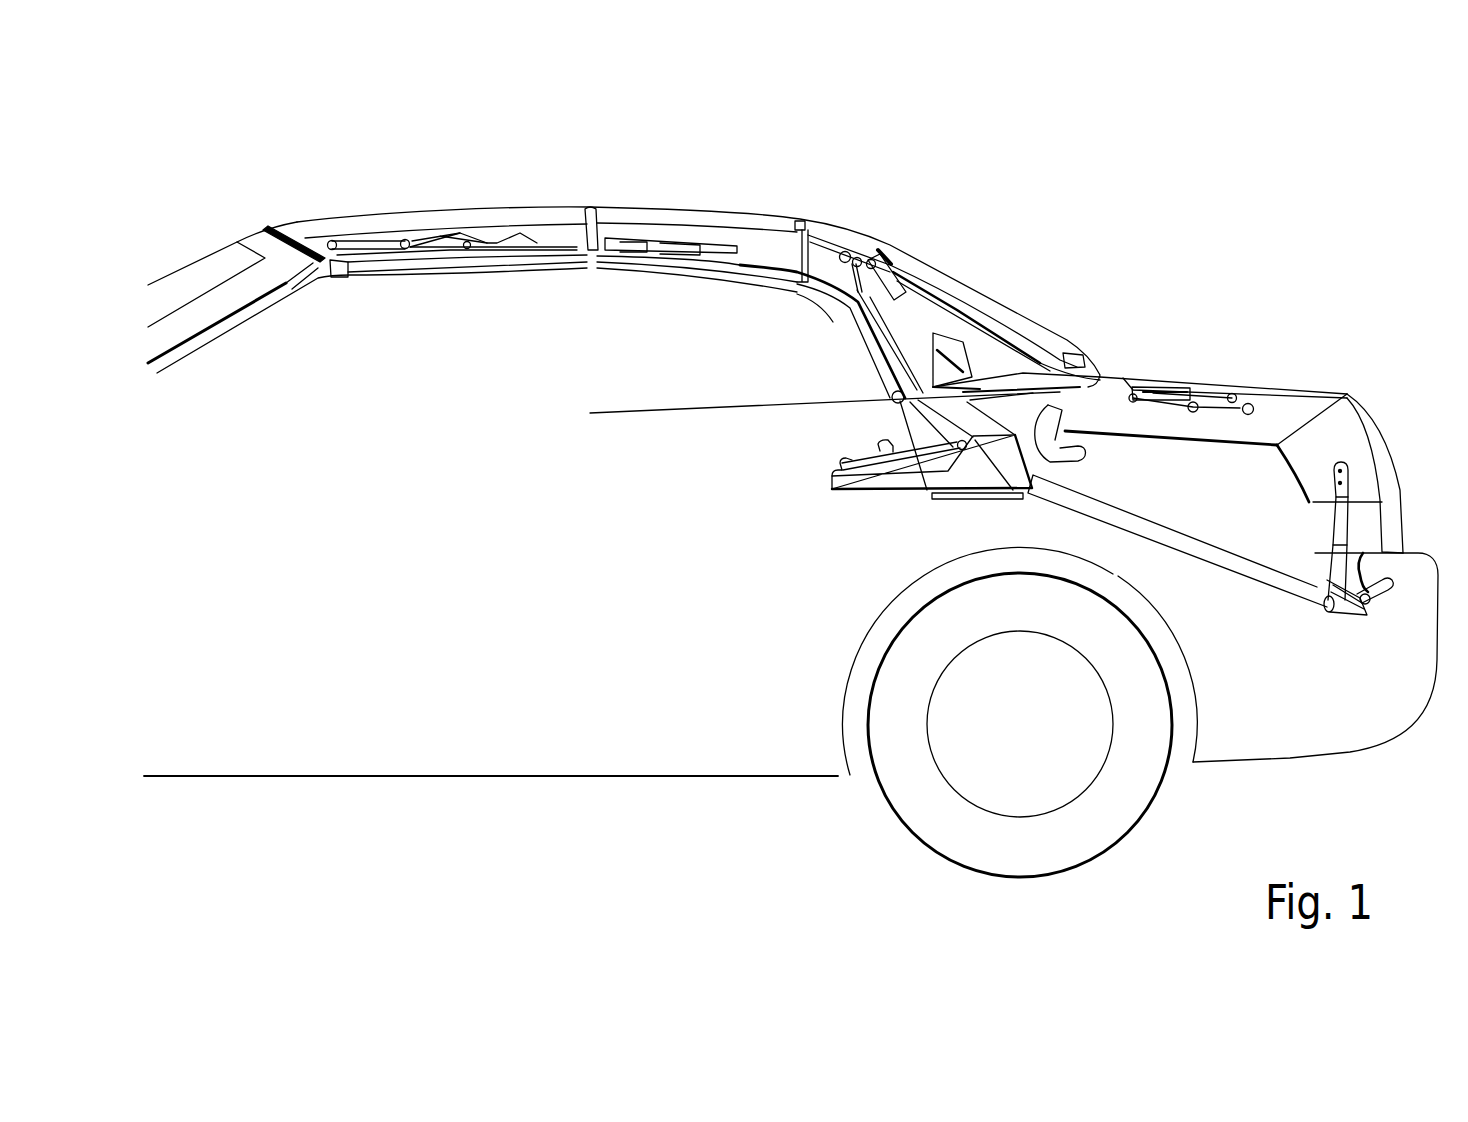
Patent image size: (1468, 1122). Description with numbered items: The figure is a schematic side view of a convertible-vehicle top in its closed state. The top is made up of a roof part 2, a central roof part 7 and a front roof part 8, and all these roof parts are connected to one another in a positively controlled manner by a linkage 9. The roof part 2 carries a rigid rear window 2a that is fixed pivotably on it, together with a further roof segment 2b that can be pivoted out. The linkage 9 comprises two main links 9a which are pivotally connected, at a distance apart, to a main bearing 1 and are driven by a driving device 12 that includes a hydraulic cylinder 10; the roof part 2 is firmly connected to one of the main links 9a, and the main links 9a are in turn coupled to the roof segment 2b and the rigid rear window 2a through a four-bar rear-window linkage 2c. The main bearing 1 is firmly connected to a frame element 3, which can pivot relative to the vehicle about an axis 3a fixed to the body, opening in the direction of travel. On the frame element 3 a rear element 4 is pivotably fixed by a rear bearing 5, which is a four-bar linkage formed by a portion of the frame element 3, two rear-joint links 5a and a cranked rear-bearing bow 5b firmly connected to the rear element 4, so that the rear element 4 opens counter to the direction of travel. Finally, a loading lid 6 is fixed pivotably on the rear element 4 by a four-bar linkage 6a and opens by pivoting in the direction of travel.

The main bearing 1 is at (875, 525).
The roof part 2 is at (960, 215).
The rigid rear window 2a is at (997, 310).
The roof segment 2b is at (827, 226).
The four-bar rear-window linkage 2c is at (872, 278).
The frame element 3 is at (1183, 545).
The axis 3a is at (892, 396).
The rear element 4 is at (1275, 420).
The rear bearing 5 is at (1320, 612).
The rear-joint links 5a is at (1356, 620).
The cranked rear-bearing bow 5b is at (1332, 541).
The loading lid 6 is at (1355, 410).
The four-bar linkage 6a is at (1189, 420).
The central roof part 7 is at (736, 200).
The front roof part 8 is at (440, 190).
The linkage 9 is at (389, 245).
The main links 9a is at (862, 306).
The hydraulic cylinder 10 is at (952, 455).
The driving device 12 is at (1093, 450).